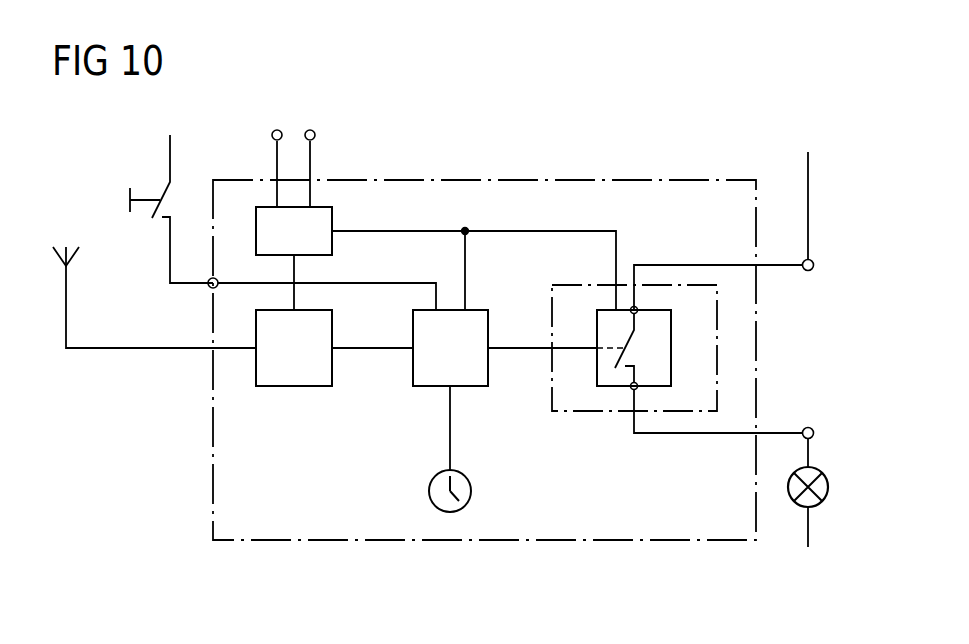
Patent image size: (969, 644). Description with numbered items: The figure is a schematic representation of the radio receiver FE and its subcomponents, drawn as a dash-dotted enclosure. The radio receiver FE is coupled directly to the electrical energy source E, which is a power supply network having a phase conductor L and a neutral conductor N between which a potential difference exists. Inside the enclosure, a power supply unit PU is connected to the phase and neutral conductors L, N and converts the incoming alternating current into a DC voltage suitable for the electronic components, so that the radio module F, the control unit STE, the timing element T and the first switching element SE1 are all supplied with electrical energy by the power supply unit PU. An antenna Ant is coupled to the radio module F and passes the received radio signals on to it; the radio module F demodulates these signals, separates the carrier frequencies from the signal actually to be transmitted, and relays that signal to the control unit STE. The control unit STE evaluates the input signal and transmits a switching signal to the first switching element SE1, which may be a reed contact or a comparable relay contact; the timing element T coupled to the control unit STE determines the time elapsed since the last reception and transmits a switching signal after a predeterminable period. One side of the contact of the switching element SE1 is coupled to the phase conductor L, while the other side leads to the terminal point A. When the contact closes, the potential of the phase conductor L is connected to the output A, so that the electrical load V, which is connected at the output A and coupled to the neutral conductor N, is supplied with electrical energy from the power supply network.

The radio receiver FE is at (470, 541).
The antenna Ant is at (68, 305).
The electrical energy source E is at (208, 289).
The phase conductor L is at (544, 127).
The neutral conductor N is at (562, 341).
The power supply unit PU is at (436, 258).
The radio module F is at (334, 348).
The control unit STE is at (430, 388).
The timing element T is at (472, 490).
The first switching element SE1 is at (593, 412).
The terminal point A is at (814, 432).
The electrical load V is at (829, 490).